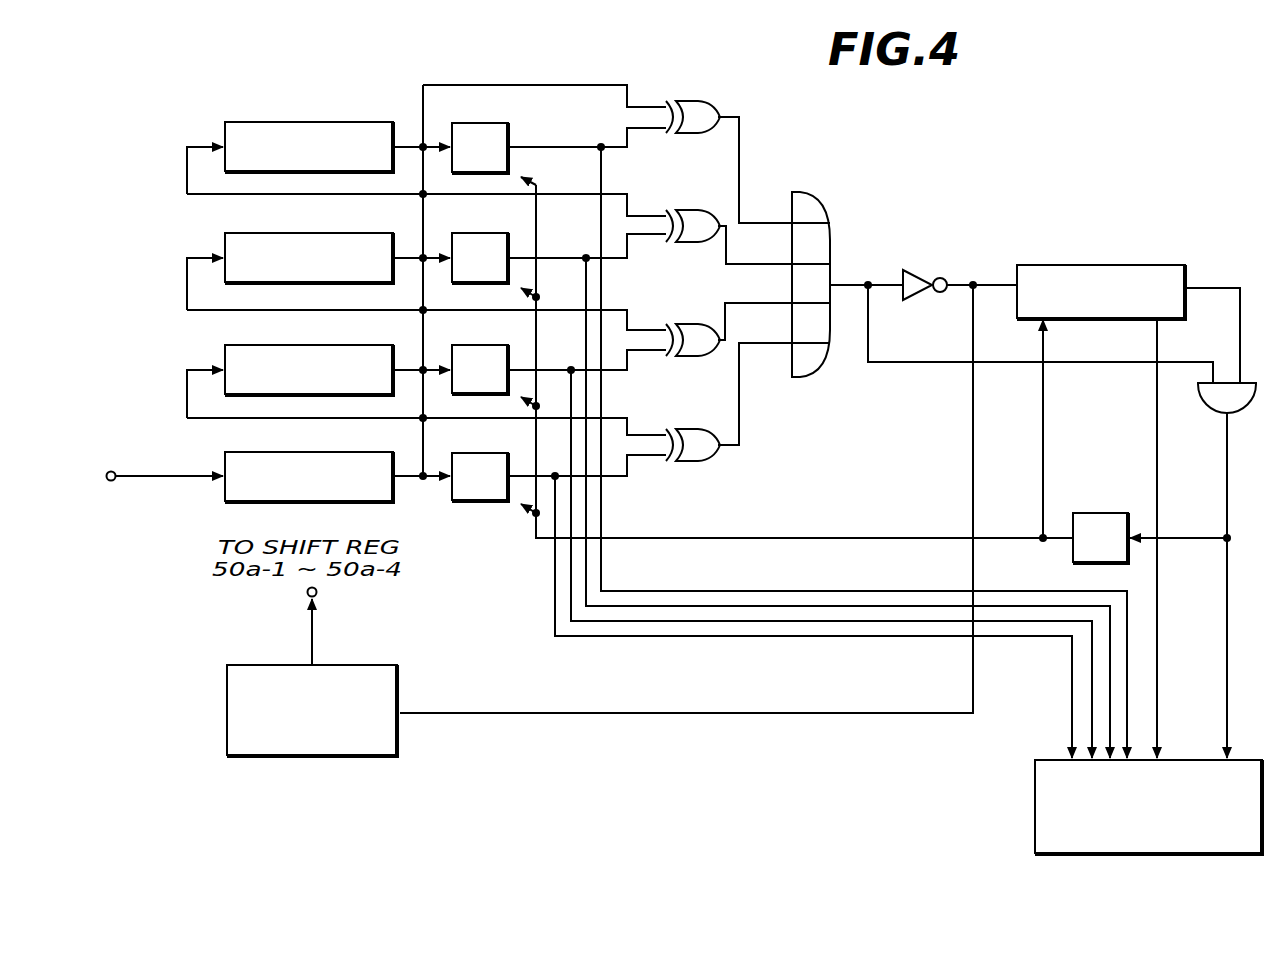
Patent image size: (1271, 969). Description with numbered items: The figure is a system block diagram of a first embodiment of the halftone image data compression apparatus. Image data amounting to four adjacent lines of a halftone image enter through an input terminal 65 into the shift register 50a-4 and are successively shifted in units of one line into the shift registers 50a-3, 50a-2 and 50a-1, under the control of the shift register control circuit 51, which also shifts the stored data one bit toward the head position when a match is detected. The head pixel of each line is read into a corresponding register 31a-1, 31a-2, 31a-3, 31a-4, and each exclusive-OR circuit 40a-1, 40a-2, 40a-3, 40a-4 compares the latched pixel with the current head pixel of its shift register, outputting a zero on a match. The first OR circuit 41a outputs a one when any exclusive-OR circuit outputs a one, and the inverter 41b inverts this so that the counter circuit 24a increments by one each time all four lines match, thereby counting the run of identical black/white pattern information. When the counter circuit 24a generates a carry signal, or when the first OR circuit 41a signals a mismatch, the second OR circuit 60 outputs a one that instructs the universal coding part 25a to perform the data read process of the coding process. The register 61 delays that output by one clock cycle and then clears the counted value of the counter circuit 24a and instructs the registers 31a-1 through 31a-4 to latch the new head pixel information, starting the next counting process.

The shift register 50a-1 is at (279, 121).
The shift register 50a-2 is at (279, 233).
The shift register 50a-3 is at (285, 345).
The shift register 50a-4 is at (285, 452).
The register 31a-1 is at (456, 123).
The register 31a-2 is at (456, 233).
The register 31a-3 is at (455, 345).
The register 31a-4 is at (452, 458).
The exclusive-OR circuit 40a-1 is at (688, 133).
The exclusive-OR circuit 40a-2 is at (688, 242).
The exclusive-OR circuit 40a-3 is at (688, 356).
The exclusive-OR circuit 40a-4 is at (690, 461).
The first OR circuit 41a is at (830, 223).
The inverter 41b is at (918, 268).
The counter circuit 24a is at (1085, 265).
The second OR circuit 60 is at (1204, 401).
The register 61 is at (1099, 513).
The input terminal 65 is at (111, 481).
The shift register control circuit 51 is at (383, 757).
The universal coding part 25a is at (1035, 797).